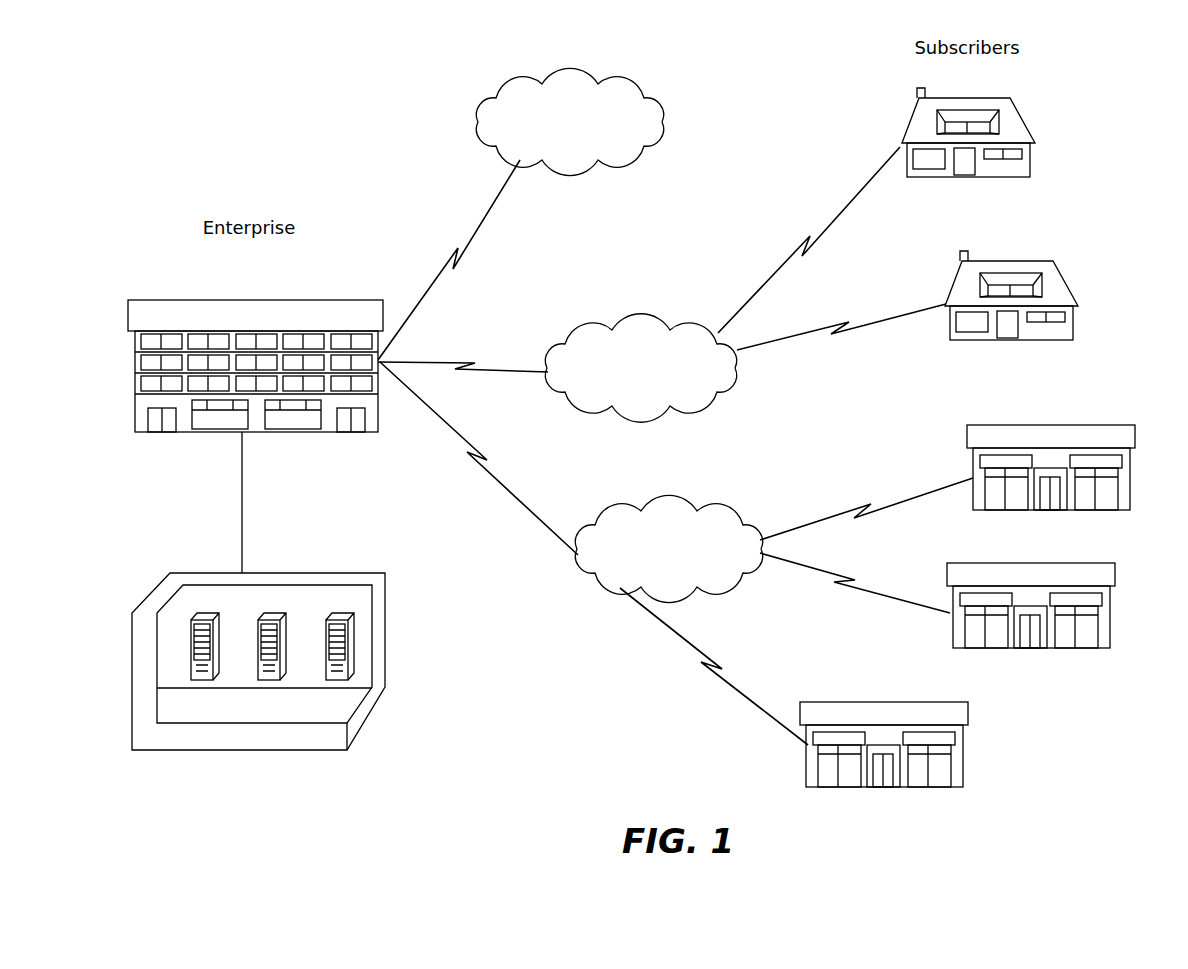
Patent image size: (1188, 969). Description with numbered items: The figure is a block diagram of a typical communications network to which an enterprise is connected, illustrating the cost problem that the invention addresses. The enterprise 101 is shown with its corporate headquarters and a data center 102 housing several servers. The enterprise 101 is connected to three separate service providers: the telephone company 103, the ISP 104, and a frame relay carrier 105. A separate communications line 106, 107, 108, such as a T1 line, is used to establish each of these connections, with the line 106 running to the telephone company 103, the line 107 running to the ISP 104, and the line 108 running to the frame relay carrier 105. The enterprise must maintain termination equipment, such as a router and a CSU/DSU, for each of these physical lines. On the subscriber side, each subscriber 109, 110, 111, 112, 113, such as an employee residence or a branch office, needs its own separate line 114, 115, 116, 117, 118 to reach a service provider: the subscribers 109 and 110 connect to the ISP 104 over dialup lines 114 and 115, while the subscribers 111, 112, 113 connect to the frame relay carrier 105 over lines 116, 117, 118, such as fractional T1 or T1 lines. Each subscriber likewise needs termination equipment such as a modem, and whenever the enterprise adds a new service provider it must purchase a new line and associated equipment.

The enterprise 101 is at (233, 378).
The data center 102 is at (250, 673).
The telephone company 103 is at (569, 121).
The ISP 104 is at (640, 368).
The frame relay carrier 105 is at (668, 548).
The communications line 106 is at (449, 260).
The communications line 107 is at (463, 365).
The communications line 108 is at (479, 458).
The subscriber 109 is at (975, 145).
The subscriber 110 is at (1019, 308).
The subscriber 111 is at (1072, 481).
The subscriber 112 is at (1051, 619).
The subscriber 113 is at (902, 758).
The line 114 is at (809, 240).
The line 115 is at (841, 322).
The line 116 is at (866, 509).
The line 117 is at (855, 583).
The line 118 is at (714, 666).